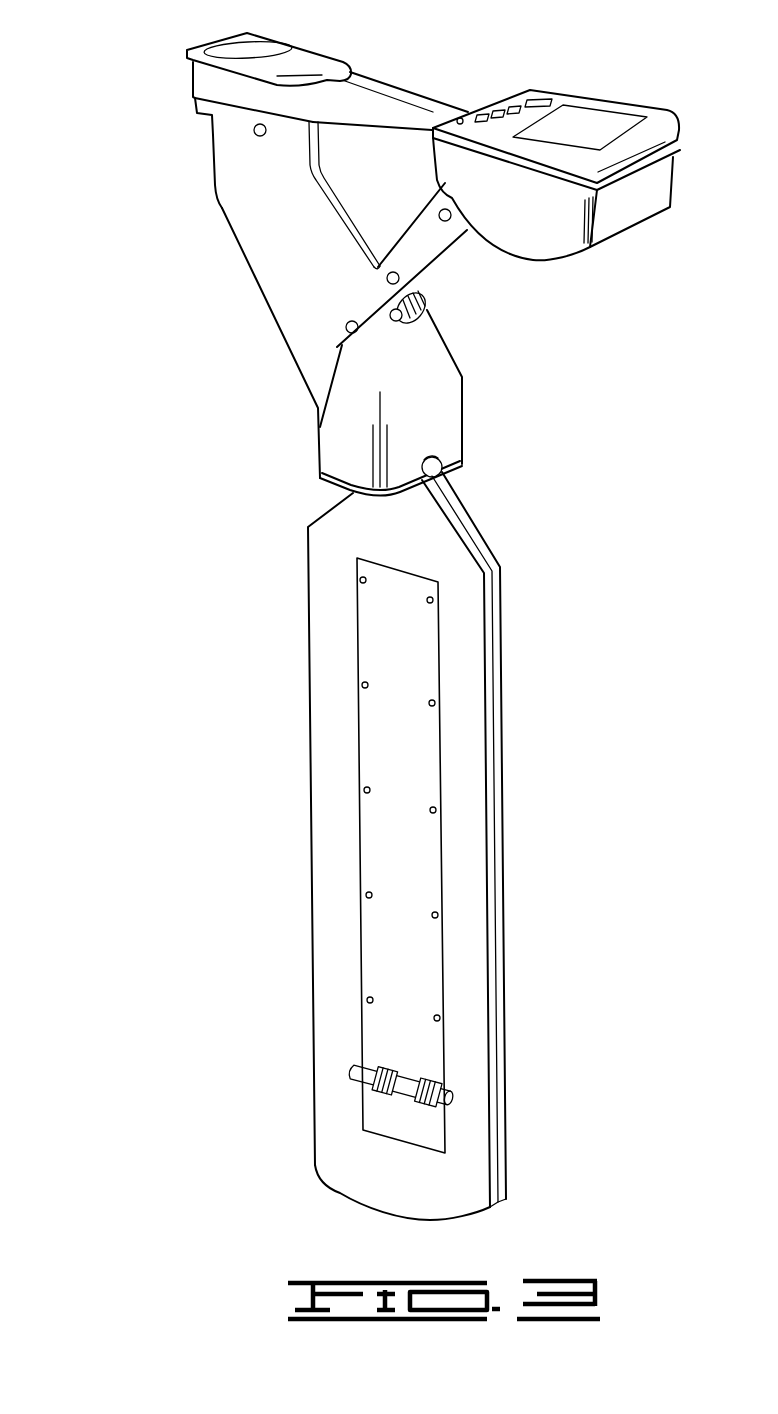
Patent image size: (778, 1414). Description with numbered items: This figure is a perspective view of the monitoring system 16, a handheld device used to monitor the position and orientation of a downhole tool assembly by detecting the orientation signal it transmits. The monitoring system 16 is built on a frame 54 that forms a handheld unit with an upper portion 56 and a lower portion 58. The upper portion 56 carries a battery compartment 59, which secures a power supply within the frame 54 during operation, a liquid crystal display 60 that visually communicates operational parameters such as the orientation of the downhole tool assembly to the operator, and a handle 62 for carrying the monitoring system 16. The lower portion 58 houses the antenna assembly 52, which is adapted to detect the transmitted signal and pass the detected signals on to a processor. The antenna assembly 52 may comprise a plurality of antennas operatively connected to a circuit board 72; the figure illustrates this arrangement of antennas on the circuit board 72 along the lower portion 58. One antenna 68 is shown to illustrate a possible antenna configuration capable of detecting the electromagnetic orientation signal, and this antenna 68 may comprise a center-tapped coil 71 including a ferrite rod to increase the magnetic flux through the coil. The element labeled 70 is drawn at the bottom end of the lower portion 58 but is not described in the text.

The monitoring system 16 is at (148, 42).
The antenna assembly 52 is at (449, 792).
The frame 54 is at (243, 263).
The upper portion 56 is at (210, 196).
The lower portion 58 is at (304, 609).
The battery compartment 59 is at (437, 435).
The liquid crystal display 60 is at (586, 122).
The handle 62 is at (413, 98).
The antenna 68 is at (455, 1090).
The bottom end 70 is at (485, 1211).
The center-tapped coil 71 is at (356, 1063).
The circuit board 72 is at (358, 757).